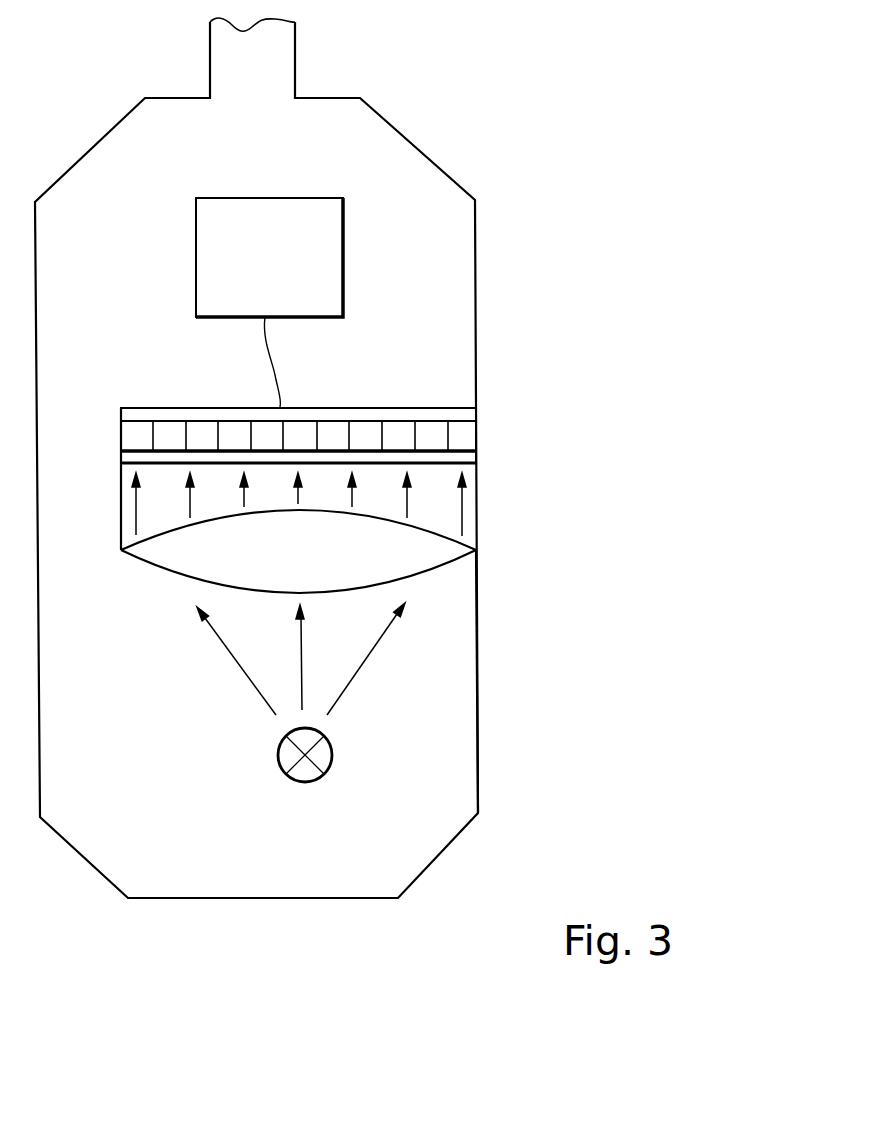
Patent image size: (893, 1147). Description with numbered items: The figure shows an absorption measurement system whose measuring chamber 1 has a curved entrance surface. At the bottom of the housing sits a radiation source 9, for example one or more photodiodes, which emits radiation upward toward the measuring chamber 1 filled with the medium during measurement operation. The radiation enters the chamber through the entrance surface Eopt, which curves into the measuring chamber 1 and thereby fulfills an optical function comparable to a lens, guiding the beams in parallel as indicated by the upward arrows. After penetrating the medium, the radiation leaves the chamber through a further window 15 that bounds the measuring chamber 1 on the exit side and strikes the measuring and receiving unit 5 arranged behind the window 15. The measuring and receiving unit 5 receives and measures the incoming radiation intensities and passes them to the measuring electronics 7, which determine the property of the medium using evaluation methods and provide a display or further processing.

The measuring chamber 1 is at (514, 509).
The measuring and receiving unit 5 is at (138, 412).
The measuring electronics 7 is at (282, 273).
The radiation source 9 is at (287, 754).
The further window 15 is at (477, 452).
The entrance surface Eopt is at (437, 527).